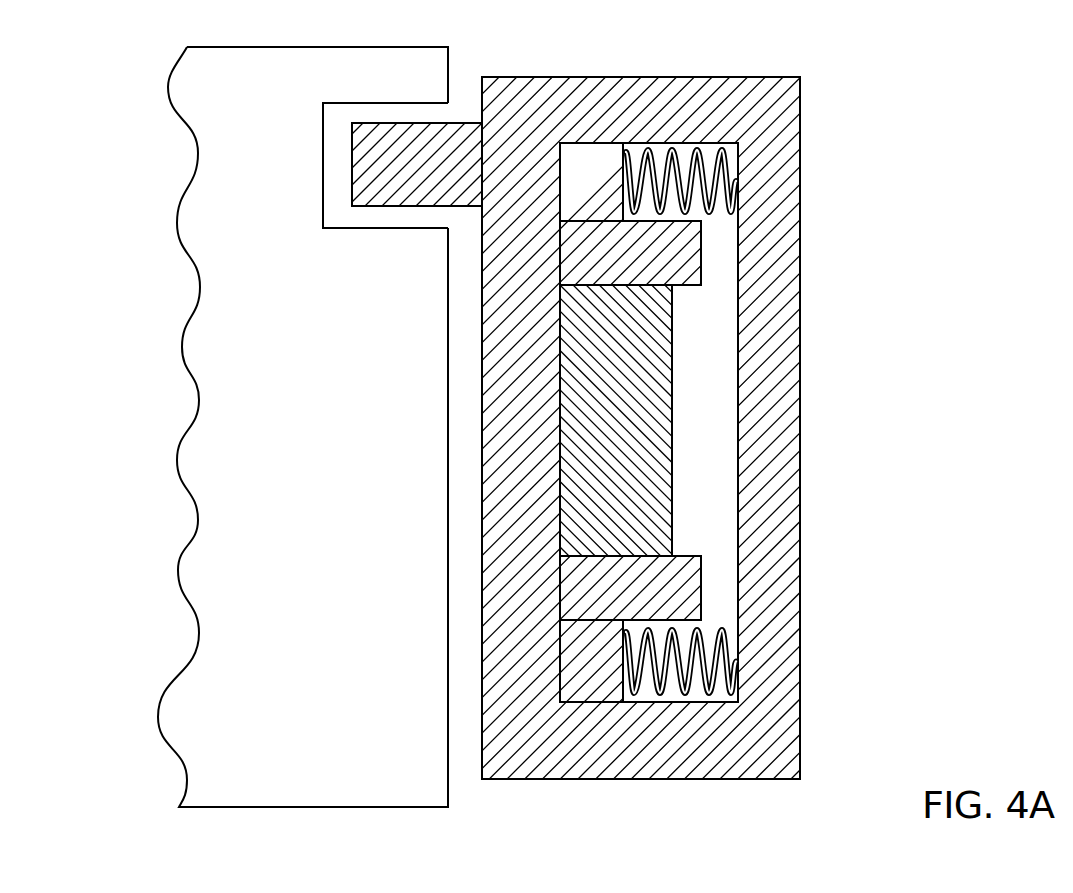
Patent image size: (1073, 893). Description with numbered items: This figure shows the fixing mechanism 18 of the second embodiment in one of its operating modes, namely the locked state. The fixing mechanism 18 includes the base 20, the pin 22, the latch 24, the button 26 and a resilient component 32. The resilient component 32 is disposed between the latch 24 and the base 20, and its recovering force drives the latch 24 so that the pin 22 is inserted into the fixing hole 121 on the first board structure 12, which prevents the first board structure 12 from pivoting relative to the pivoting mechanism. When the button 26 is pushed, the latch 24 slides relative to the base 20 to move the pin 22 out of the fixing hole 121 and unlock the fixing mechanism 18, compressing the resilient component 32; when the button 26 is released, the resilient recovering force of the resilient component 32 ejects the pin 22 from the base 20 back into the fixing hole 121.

The first board structure 12 is at (245, 292).
The fixing hole 121 is at (430, 115).
The fixing mechanism 18 is at (873, 83).
The base 20 is at (783, 653).
The pin 22 is at (402, 135).
The latch 24 is at (591, 158).
The button 26 is at (650, 450).
The resilient component 32 is at (689, 158).